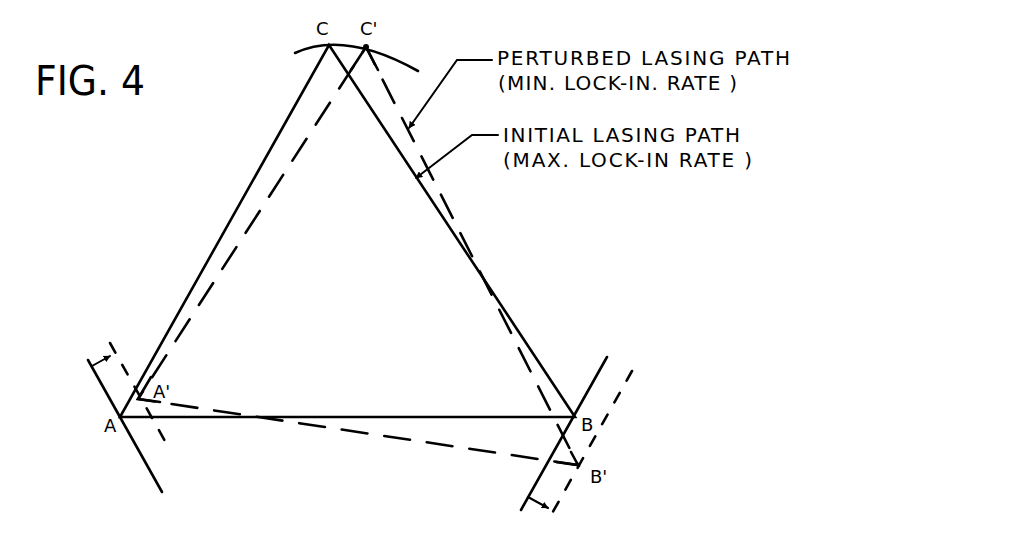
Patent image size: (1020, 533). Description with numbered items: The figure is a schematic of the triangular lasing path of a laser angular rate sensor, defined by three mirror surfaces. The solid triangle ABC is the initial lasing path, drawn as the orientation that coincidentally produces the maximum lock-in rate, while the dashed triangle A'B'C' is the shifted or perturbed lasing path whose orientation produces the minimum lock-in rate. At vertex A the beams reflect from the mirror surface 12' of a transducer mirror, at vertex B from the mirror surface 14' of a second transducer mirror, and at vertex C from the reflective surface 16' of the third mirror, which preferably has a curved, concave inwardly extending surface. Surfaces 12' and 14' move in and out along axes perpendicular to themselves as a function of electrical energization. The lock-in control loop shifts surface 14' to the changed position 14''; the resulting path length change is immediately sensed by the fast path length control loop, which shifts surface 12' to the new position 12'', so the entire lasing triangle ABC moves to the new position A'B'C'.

The mirror surface of transducer mirror 12' is at (125, 429).
The shifted position of mirror surface 12'' is at (171, 421).
The mirror surface of transducer mirror 14' is at (566, 407).
The shifted position of mirror surface 14'' is at (620, 444).
The reflective surface of third mirror 16' is at (367, 35).